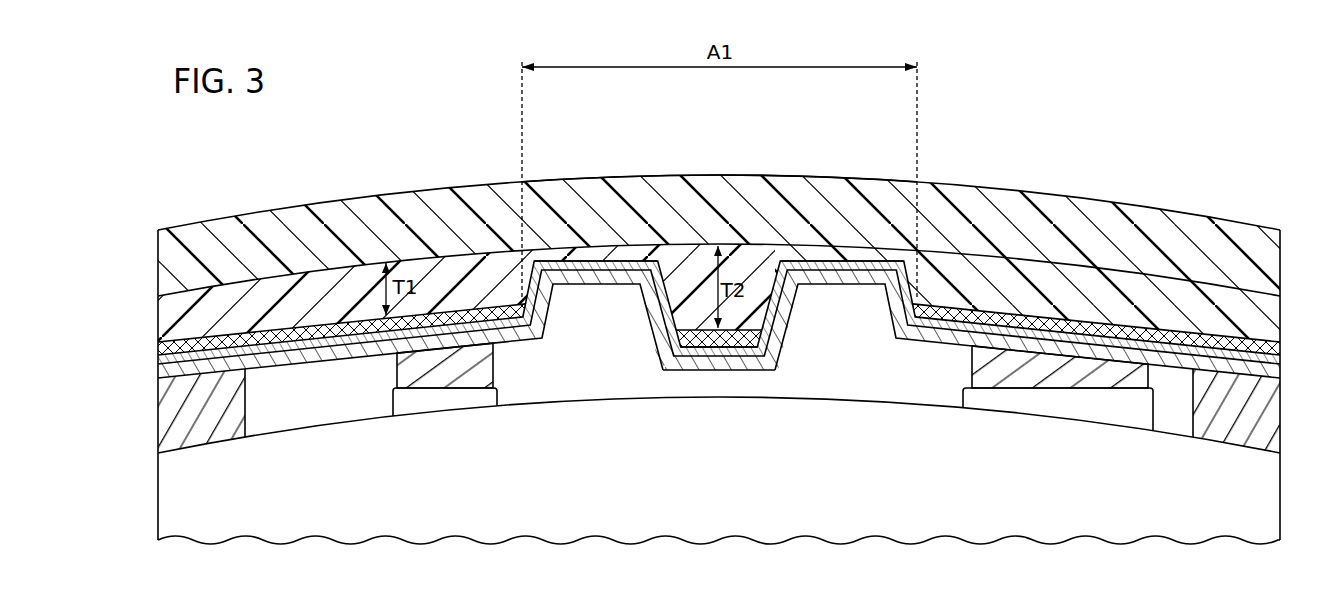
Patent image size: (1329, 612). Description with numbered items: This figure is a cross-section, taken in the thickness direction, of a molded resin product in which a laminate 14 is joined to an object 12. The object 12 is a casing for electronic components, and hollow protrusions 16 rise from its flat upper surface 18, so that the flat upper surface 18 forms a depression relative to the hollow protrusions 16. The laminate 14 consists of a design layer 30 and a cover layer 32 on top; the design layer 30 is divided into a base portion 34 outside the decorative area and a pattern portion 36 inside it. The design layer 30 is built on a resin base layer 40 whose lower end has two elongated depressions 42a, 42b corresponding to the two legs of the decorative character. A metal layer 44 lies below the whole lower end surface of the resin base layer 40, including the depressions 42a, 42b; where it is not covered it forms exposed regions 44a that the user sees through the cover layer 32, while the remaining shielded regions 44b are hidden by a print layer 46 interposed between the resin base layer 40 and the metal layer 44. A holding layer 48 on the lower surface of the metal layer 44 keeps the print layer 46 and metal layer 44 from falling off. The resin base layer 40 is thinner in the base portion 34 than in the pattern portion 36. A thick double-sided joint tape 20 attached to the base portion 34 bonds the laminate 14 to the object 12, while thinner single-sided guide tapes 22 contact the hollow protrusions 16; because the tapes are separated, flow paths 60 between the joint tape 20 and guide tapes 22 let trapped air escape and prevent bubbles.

The object 12 is at (845, 417).
The laminate 14 is at (1247, 211).
The hollow protrusions 16 is at (408, 403).
The flat upper surface 18 is at (638, 397).
The joint tape 20 is at (165, 417).
The guide tapes 22 is at (485, 361).
The design layer 30 is at (1283, 302).
The cover layer 32 is at (165, 255).
The base portion 34 is at (311, 181).
The pattern portion 36 is at (687, 156).
The resin base layer 40 is at (165, 317).
The depression 42a is at (597, 263).
The depression 42b is at (838, 263).
The metal layer 44 is at (337, 340).
The exposed regions 44a is at (628, 261).
The shielded regions 44b is at (717, 353).
The print layer 46 is at (465, 304).
The holding layer 48 is at (677, 372).
The flow paths 60 is at (267, 415).